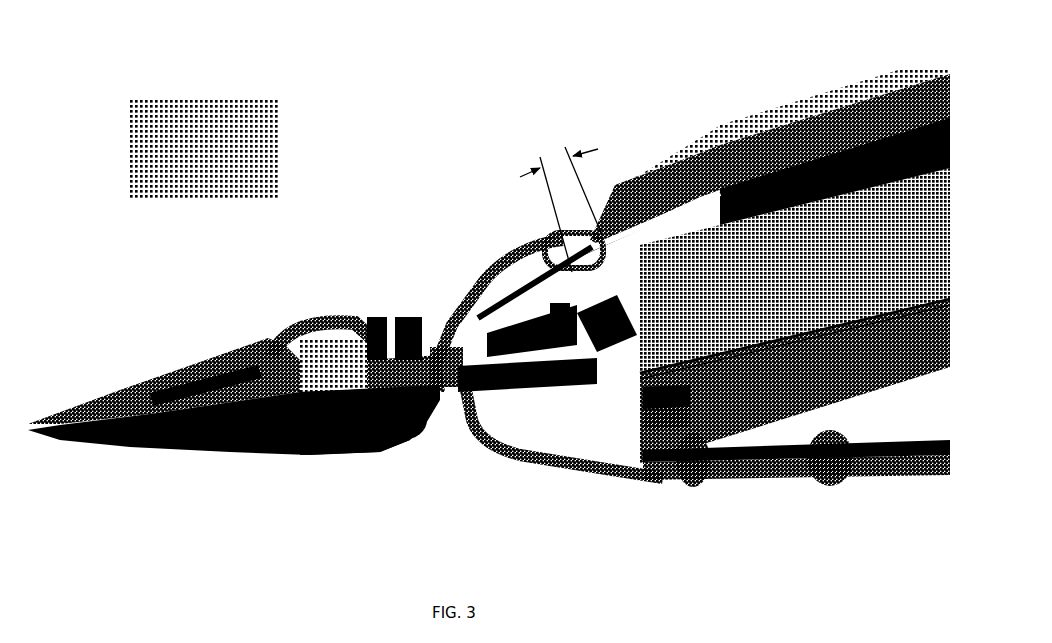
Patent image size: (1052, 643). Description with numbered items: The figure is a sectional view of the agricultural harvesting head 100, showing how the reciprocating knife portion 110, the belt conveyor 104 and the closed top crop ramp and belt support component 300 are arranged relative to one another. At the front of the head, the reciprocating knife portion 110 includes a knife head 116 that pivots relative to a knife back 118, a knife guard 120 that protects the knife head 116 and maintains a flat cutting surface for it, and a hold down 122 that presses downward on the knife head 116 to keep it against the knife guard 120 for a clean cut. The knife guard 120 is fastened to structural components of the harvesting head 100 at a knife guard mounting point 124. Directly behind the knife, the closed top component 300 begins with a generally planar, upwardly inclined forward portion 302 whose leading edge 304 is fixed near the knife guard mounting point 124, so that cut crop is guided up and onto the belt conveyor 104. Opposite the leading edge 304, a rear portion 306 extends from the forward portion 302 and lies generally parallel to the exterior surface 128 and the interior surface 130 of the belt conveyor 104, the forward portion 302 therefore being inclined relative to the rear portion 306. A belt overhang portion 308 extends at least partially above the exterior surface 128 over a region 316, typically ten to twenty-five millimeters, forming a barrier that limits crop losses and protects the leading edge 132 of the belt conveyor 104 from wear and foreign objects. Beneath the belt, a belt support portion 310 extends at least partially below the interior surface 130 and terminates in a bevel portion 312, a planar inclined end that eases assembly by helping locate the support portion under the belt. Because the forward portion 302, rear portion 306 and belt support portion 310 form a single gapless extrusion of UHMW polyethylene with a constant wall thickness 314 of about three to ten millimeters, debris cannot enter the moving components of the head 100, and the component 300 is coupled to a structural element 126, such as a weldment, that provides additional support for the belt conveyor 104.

The agricultural harvesting head 100 is at (88, 129).
The belt conveyor 104 is at (838, 110).
The reciprocating knife portion 110 is at (86, 292).
The knife head 116 is at (217, 400).
The knife back 118 is at (313, 396).
The knife guard 120 is at (115, 410).
The hold down 122 is at (293, 348).
The knife guard mounting point 124 is at (410, 448).
The structural element 126 is at (525, 303).
The exterior surface 128 is at (677, 207).
The interior surface 130 is at (700, 148).
The leading edge 132 is at (600, 335).
The closed top crop ramp and belt support component 300 is at (422, 232).
The forward portion 302 is at (494, 293).
The leading edge 304 is at (435, 358).
The rear portion 306 is at (513, 252).
The belt overhang portion 308 is at (557, 240).
The belt support portion 310 is at (640, 228).
The bevel portion 312 is at (753, 215).
The wall thickness 314 is at (475, 280).
The region 316 is at (596, 150).